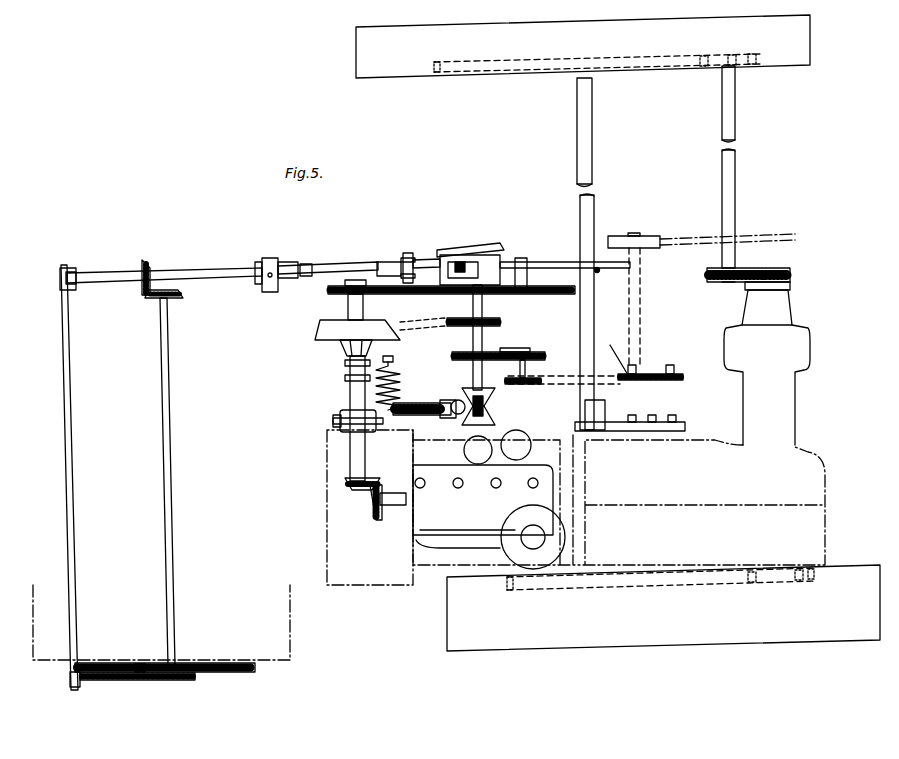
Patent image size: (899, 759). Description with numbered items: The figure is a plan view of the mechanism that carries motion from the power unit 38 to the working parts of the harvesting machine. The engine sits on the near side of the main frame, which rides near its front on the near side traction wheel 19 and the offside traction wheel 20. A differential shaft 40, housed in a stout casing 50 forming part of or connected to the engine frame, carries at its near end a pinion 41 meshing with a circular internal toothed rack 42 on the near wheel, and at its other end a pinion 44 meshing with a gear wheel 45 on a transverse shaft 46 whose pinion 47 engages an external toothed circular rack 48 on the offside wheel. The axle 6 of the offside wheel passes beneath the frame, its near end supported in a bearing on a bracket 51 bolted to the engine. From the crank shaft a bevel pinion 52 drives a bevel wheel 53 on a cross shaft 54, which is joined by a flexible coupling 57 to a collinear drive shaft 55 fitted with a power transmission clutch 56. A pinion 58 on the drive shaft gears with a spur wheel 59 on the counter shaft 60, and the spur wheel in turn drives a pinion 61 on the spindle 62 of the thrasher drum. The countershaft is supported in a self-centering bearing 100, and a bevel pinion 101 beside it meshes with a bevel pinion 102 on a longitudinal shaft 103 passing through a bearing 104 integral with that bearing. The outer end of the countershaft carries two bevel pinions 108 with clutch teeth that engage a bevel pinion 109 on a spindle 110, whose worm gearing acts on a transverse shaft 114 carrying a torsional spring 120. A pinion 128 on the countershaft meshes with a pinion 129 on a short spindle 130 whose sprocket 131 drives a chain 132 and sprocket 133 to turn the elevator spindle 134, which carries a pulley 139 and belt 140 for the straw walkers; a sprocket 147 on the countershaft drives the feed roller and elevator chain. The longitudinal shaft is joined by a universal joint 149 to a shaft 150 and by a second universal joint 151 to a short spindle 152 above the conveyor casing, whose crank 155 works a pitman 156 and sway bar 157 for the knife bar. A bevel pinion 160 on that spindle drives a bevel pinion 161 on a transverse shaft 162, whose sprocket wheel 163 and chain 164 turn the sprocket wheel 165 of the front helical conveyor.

The transverse axle 6 is at (592, 149).
The near side traction wheel 19 is at (663, 608).
The offside traction wheel 20 is at (583, 46).
The power unit 38 is at (493, 499).
The differential shaft 40 is at (782, 286).
The pinion 41 is at (774, 584).
The circular internal toothed rack 42 is at (528, 594).
The pinion 44 is at (790, 274).
The gear wheel 45 is at (720, 283).
The transverse shaft 46 is at (735, 216).
The pinion 47 is at (754, 57).
The external toothed circular rack 48 is at (452, 62).
The casing 50 is at (699, 500).
The bracket 51 is at (616, 420).
The bevel pinion 52 is at (382, 486).
The bevel wheel 53 is at (344, 484).
The cross shaft 54 is at (368, 445).
The drive shaft 55 is at (350, 397).
The power transmission clutch 56 is at (316, 341).
The flexible coupling 57 is at (332, 420).
The pinion 58 is at (328, 290).
The spur wheel 59 is at (430, 300).
The counter shaft 60 is at (494, 333).
The pinion 61 is at (527, 292).
The spindle 62 is at (526, 262).
The self-centering bearing 100 is at (472, 258).
The bevel pinion 101 is at (482, 292).
The bevel pinion 102 is at (500, 248).
The longitudinal shaft 103 is at (567, 248).
The bearing 104 is at (454, 260).
The bevel pinions 108 is at (495, 404).
The bevel pinion 109 is at (465, 392).
The spindle 110 is at (454, 418).
The transverse shaft 114 is at (395, 350).
The torsional spring 120 is at (404, 384).
The pinion 128 is at (453, 352).
The pinion 129 is at (535, 350).
The short spindle 130 is at (525, 373).
The sprocket 131 is at (539, 384).
The chain 132 is at (613, 351).
The sprocket 133 is at (652, 364).
The spindle 134 is at (640, 295).
The pulley 139 is at (645, 236).
The belt 140 is at (768, 232).
The sprocket 147 is at (500, 320).
The universal joint 149 is at (409, 252).
The shaft 150 is at (360, 262).
The universal joint 151 is at (258, 258).
The short spindle 152 is at (192, 270).
The crank 155 is at (76, 268).
The pitman 156 is at (60, 358).
The sway bar 157 is at (70, 685).
The bevel pinion 160 is at (148, 260).
The bevel pinion 161 is at (178, 300).
The transverse shaft 162 is at (172, 384).
The sprocket wheel 163 is at (193, 678).
The chain 164 is at (142, 662).
The sprocket wheel 165 is at (96, 663).